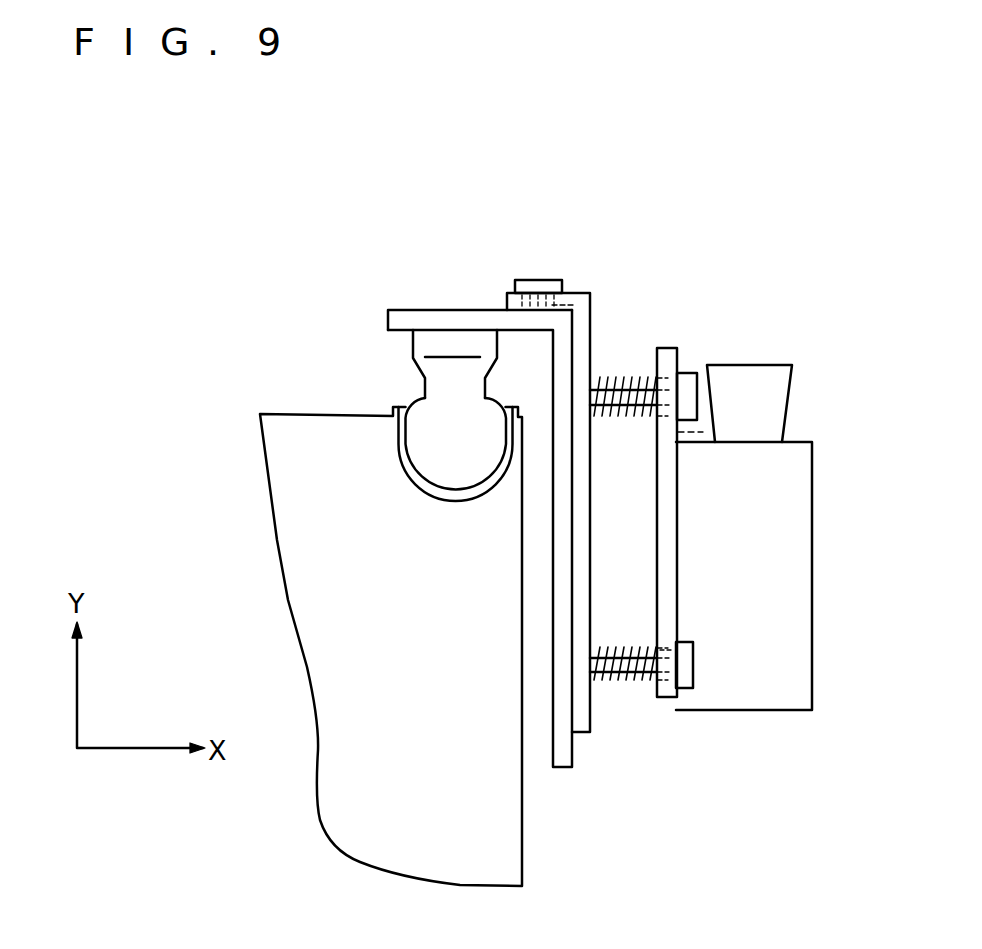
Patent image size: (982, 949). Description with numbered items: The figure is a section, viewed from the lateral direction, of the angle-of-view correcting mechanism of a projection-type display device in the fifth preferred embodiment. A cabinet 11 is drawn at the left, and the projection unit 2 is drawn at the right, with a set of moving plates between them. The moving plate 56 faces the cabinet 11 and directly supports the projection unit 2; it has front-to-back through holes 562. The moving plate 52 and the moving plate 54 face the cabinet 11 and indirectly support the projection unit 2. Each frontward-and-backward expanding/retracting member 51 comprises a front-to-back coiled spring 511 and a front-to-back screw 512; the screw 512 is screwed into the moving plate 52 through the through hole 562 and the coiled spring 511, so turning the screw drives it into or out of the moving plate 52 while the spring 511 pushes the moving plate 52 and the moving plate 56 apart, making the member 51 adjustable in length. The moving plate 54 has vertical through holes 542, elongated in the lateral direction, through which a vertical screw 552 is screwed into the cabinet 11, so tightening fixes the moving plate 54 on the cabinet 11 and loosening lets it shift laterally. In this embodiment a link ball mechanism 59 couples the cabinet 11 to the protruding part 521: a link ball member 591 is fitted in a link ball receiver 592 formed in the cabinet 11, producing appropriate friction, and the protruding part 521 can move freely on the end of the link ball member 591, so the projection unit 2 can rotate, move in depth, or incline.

The projection unit 2 is at (793, 541).
The cabinet 11 is at (323, 676).
The frontward-and-backward expanding/retracting member 51 is at (773, 735).
The front-to-back coiled spring 511 is at (602, 680).
The front-to-back screw 512 is at (682, 677).
The moving plate 52 is at (560, 747).
The protruding part 521 is at (420, 322).
The moving plate 54 is at (592, 342).
The vertical through hole 542 is at (592, 287).
The vertical screw 552 is at (528, 279).
The moving plate 56 is at (670, 348).
The front-to-back through hole 562 is at (667, 640).
The link ball mechanism 59 is at (142, 440).
The link ball member 591 is at (410, 432).
The link ball receiver 592 is at (400, 465).